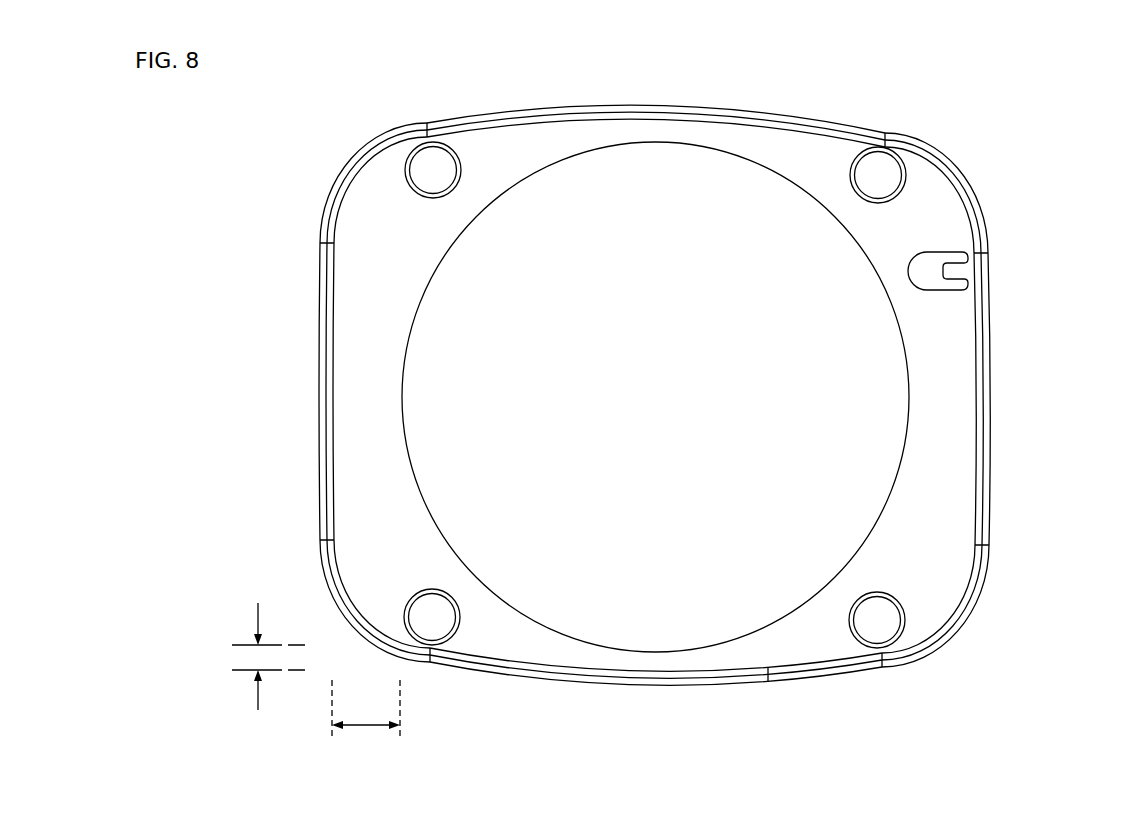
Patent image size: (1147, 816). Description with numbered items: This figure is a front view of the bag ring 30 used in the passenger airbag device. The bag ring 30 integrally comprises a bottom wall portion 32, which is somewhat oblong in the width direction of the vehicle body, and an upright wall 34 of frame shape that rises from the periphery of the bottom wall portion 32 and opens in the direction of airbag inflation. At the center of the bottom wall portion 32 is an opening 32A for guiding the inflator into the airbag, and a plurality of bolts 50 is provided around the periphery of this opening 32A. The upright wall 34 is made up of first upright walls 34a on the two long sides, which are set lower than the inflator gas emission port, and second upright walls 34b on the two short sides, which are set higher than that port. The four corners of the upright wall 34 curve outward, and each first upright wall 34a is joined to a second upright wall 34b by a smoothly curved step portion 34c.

The bag ring 30 is at (1027, 239).
The upright wall 34 is at (1007, 359).
The first upright wall 34a is at (335, 378).
The second upright wall 34b is at (450, 133).
The step portion 34c is at (350, 173).
The bottom wall portion 32 is at (950, 492).
The opening 32A is at (649, 633).
The bolts 50 is at (423, 153).